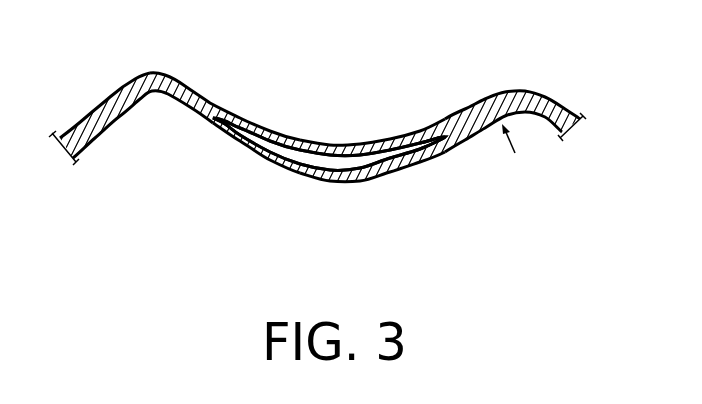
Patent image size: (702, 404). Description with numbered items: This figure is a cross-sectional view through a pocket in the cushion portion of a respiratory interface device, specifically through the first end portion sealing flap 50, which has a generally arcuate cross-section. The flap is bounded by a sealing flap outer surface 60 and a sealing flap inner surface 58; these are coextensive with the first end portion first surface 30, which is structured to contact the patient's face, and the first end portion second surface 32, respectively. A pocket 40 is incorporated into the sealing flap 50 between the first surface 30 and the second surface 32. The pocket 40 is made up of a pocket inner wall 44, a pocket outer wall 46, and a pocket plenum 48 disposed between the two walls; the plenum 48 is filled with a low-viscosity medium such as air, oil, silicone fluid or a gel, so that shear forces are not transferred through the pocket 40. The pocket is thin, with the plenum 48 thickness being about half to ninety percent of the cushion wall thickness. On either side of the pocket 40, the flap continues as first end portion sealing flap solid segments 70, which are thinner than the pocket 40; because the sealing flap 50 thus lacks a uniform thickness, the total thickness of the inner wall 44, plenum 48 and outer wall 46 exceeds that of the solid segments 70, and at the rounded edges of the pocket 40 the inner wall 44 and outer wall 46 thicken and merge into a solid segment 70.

The first end portion first surface 30 is at (556, 103).
The first end portion second surface 32 is at (532, 114).
The first end portion sealing flap solid segment 70 is at (93, 111).
The first end portion sealing flap 50 is at (163, 94).
The sealing flap outer surface 60 is at (293, 138).
The pocket 40 is at (330, 160).
The pocket inner wall 44 is at (288, 172).
The sealing flap inner surface 58 is at (355, 183).
The pocket outer wall 46 is at (402, 137).
The pocket plenum 48 is at (374, 161).